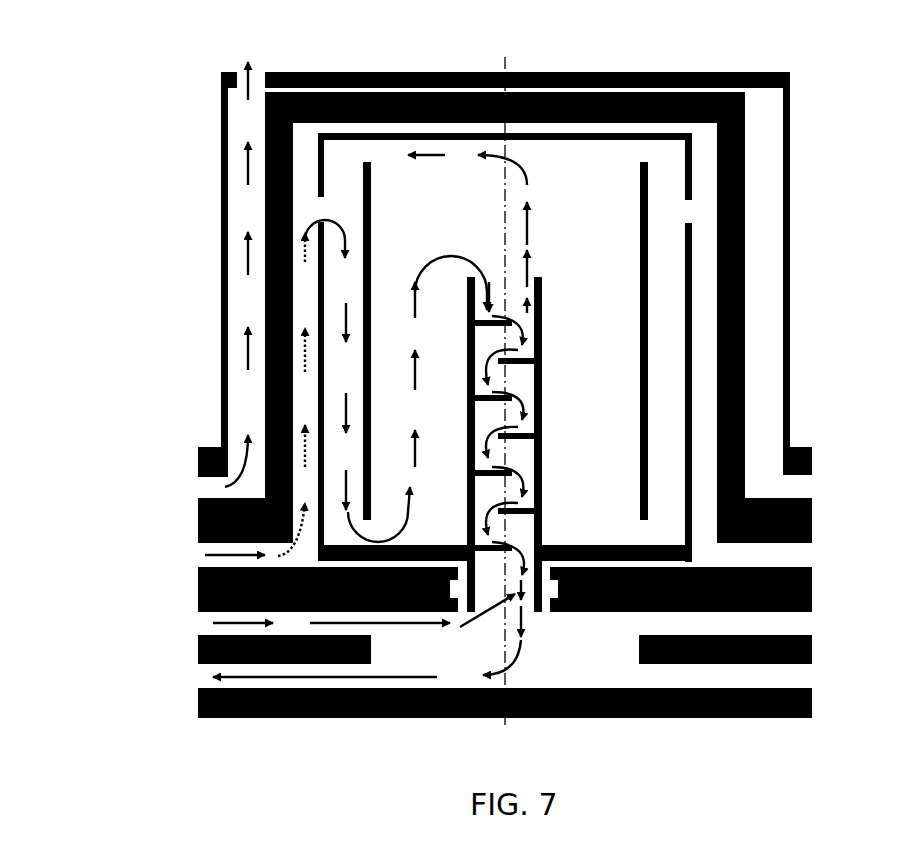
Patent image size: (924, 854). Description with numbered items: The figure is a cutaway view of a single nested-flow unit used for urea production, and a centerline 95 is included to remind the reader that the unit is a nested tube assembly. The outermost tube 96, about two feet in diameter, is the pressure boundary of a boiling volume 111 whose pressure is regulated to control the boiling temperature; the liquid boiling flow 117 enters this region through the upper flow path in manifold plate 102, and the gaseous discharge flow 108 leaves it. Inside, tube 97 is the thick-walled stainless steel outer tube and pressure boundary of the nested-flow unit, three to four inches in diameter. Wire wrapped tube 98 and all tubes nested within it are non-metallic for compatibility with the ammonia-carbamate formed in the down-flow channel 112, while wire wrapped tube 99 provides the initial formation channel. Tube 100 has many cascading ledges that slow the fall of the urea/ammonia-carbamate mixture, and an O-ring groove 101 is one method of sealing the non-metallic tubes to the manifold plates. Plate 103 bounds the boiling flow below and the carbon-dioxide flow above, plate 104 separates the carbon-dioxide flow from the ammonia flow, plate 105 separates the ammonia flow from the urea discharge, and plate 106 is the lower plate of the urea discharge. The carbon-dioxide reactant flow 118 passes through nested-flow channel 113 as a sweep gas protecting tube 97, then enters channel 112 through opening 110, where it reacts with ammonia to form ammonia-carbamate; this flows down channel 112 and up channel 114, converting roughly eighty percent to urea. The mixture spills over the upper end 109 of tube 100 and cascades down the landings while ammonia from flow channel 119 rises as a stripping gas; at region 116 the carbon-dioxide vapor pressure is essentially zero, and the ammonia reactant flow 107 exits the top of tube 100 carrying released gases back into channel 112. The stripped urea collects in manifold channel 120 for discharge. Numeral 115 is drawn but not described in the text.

The centerline 95 is at (497, 55).
The tube 96 is at (792, 106).
The tube 97 is at (748, 196).
The wire wrapped tube 98 is at (698, 274).
The wire wrapped tube 99 is at (650, 362).
The tube 100 is at (547, 483).
The O-ring groove 101 is at (460, 588).
The manifold plate 102 is at (815, 460).
The plate 103 is at (815, 520).
The plate 104 is at (815, 578).
The plate 105 is at (815, 645).
The plate 106 is at (815, 705).
The ammonia reactant flow 107 is at (457, 155).
The gaseous discharge flow 108 is at (250, 63).
The upper end 109 is at (314, 204).
The opening 110 is at (465, 253).
The boiling volume 111 is at (247, 218).
The down-flow channel 112 is at (307, 313).
The nested-flow channel 113 is at (345, 296).
The channel 114 is at (405, 405).
The central tube with fins 115 is at (472, 497).
The region 116 is at (465, 665).
The boiling flow 117 is at (195, 487).
The carbon-dioxide reactant flow 118 is at (195, 555).
The flow channel 119 is at (195, 623).
The manifold channel 120 is at (197, 672).